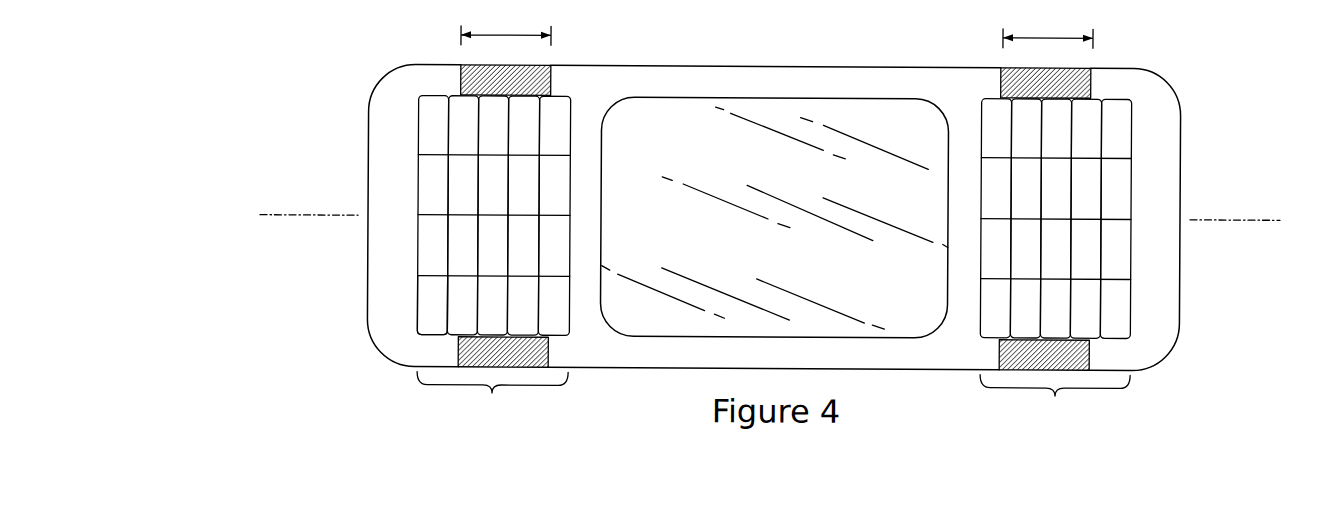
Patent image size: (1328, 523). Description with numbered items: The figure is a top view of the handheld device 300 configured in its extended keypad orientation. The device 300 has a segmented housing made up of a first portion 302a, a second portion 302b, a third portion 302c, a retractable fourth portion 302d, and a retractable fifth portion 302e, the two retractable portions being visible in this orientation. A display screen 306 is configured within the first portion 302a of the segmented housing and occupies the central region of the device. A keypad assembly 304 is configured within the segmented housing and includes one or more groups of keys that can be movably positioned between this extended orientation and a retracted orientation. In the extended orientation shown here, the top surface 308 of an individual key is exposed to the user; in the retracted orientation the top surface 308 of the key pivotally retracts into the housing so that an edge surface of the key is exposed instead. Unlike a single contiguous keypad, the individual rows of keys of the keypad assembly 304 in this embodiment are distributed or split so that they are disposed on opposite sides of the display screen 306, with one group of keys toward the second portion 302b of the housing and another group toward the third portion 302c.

The handheld device 300 is at (301, 39).
The first portion 302a is at (885, 361).
The second portion 302b is at (377, 139).
The third portion 302c is at (1172, 133).
The retractable fourth portion 302d is at (530, 80).
The retractable fifth portion 302e is at (998, 74).
The keypad assembly 304 is at (774, 264).
The display screen 306 is at (667, 148).
The top surface 308 is at (432, 298).